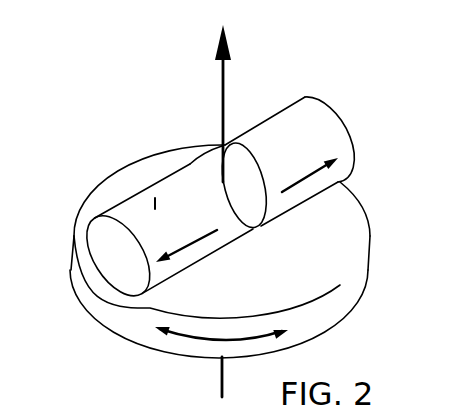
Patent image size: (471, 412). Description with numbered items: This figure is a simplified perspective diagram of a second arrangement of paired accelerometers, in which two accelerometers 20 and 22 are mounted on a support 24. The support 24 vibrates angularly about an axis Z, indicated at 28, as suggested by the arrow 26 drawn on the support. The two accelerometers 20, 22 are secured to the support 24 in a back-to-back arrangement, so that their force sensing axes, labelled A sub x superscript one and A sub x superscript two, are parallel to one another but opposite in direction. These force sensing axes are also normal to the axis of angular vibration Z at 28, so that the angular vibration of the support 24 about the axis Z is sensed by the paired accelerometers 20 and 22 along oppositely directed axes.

The accelerometer 20 is at (85, 233).
The accelerometer 22 is at (333, 106).
The support 24 is at (350, 314).
The arrow 26 is at (200, 339).
The axis Z 28 is at (225, 78).